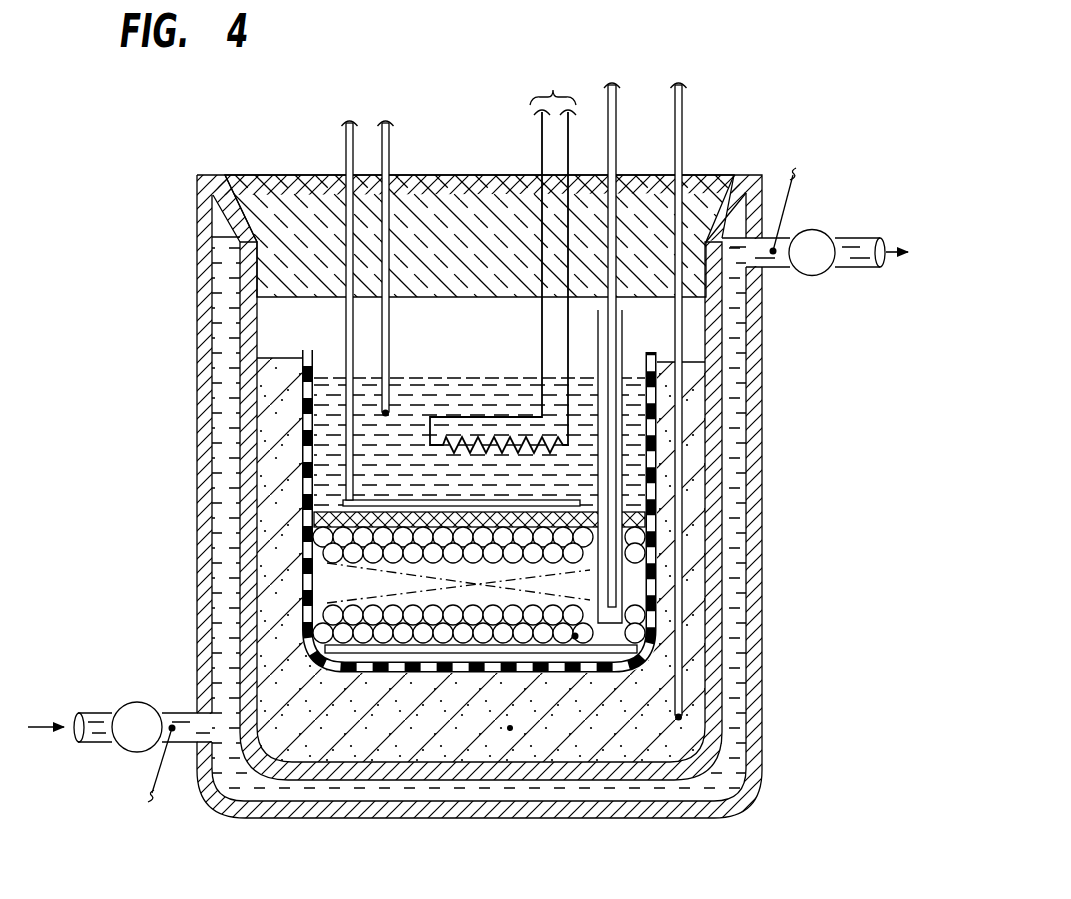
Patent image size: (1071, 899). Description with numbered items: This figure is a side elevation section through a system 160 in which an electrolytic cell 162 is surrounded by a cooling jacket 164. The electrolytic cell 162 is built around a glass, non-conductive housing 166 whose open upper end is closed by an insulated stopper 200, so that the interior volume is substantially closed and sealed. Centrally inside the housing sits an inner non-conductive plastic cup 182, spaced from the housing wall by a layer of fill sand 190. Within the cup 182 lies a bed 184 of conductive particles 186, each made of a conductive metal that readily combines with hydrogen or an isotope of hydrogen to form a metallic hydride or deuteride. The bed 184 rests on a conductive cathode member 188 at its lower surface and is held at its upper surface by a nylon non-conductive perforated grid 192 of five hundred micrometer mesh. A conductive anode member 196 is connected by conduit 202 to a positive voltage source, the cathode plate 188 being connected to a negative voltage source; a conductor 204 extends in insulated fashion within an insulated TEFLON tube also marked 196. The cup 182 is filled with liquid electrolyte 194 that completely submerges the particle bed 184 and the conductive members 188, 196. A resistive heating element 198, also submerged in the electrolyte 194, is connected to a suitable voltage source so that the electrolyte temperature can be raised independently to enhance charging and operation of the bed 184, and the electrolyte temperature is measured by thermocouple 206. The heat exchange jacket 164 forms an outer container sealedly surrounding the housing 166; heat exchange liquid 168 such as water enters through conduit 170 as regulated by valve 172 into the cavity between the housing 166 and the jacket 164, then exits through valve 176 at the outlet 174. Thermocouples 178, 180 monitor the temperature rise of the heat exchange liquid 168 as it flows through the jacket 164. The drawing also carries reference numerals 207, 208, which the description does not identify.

The system 160 is at (145, 360).
The electrolytic cell 162 is at (238, 520).
The cooling jacket 164 is at (762, 512).
The non-conductive housing 166 is at (720, 435).
The heat exchange liquid 168 is at (745, 562).
The conduit 170 is at (110, 713).
The valve 172 is at (133, 752).
The outlet 174 is at (850, 269).
The valve 176 is at (814, 229).
The thermocouple 178 is at (160, 800).
The thermocouple 180 is at (788, 185).
The non-conductive plastic cup 182 is at (575, 636).
The bed of conductive particles 184 is at (600, 560).
The conductive particles 186 is at (583, 663).
The conductive cathode member 188 is at (418, 653).
The fill sand 190 is at (510, 730).
The non-conductive perforated grid 192 is at (630, 490).
The liquid electrolyte 194 is at (640, 418).
The conductive anode member 196 is at (367, 497).
The resistive heating element 198 is at (500, 440).
The insulated stopper 200 is at (268, 190).
The conduit 202 is at (345, 155).
The conductor 204 is at (618, 105).
The thermocouple 206 is at (391, 135).
The heater leads 207 is at (553, 92).
The thermocouple probe 208 is at (686, 108).